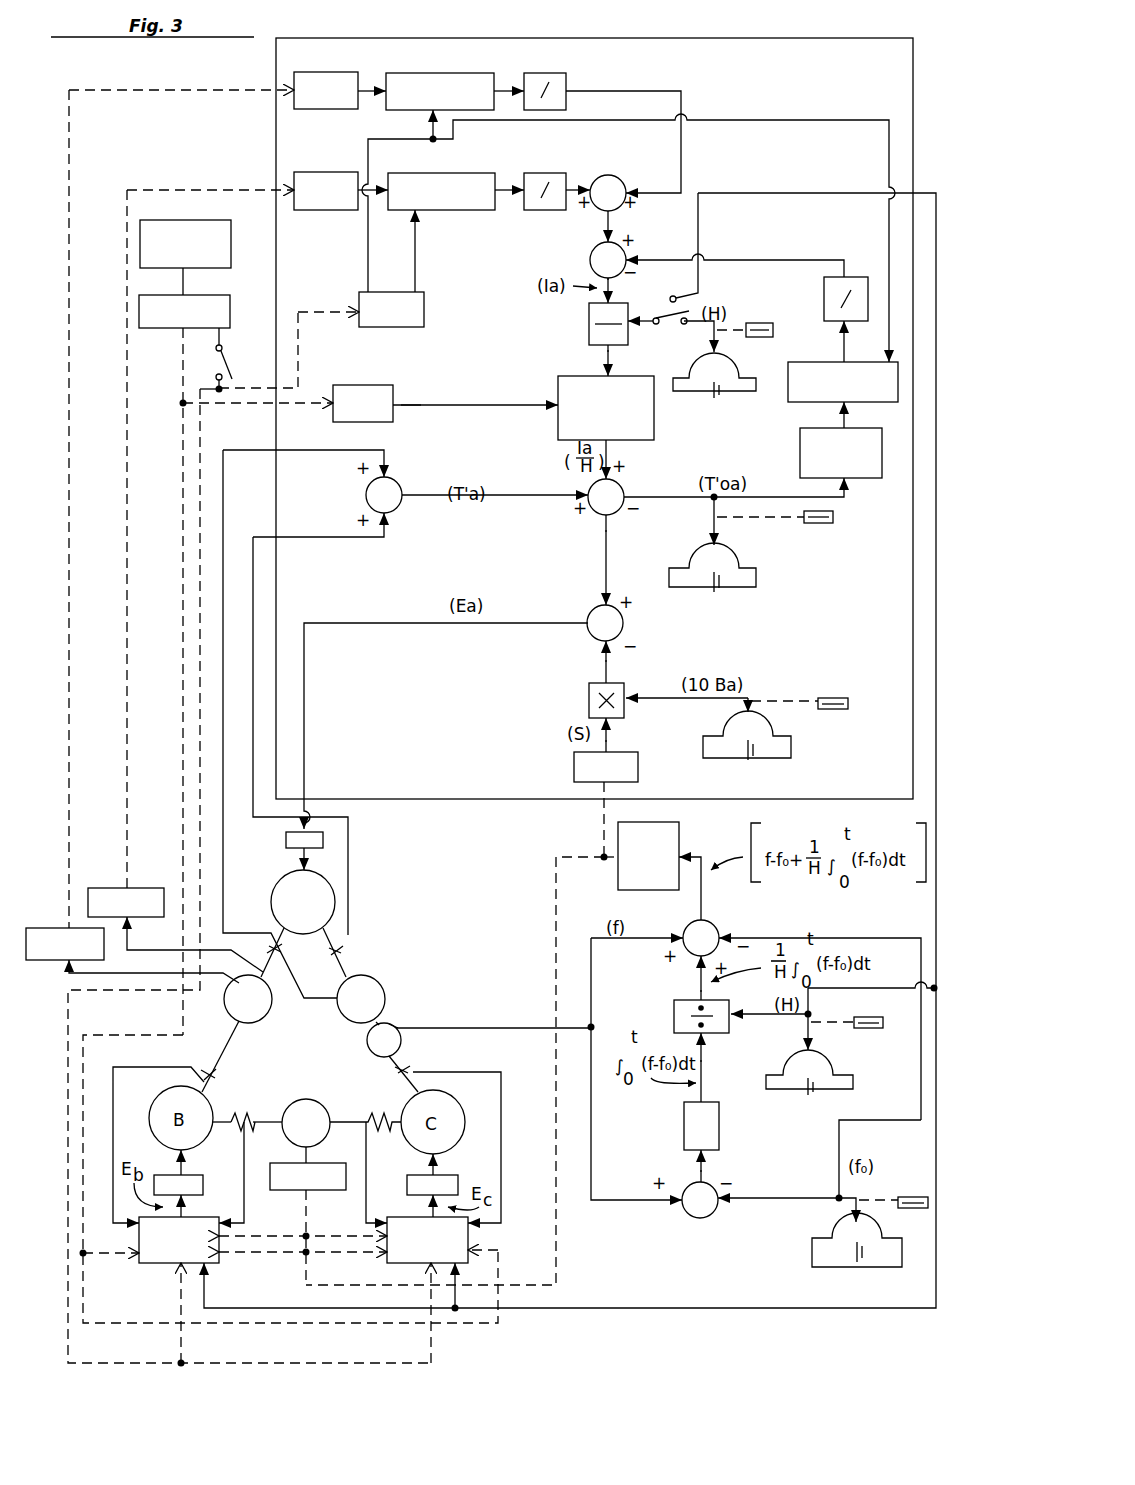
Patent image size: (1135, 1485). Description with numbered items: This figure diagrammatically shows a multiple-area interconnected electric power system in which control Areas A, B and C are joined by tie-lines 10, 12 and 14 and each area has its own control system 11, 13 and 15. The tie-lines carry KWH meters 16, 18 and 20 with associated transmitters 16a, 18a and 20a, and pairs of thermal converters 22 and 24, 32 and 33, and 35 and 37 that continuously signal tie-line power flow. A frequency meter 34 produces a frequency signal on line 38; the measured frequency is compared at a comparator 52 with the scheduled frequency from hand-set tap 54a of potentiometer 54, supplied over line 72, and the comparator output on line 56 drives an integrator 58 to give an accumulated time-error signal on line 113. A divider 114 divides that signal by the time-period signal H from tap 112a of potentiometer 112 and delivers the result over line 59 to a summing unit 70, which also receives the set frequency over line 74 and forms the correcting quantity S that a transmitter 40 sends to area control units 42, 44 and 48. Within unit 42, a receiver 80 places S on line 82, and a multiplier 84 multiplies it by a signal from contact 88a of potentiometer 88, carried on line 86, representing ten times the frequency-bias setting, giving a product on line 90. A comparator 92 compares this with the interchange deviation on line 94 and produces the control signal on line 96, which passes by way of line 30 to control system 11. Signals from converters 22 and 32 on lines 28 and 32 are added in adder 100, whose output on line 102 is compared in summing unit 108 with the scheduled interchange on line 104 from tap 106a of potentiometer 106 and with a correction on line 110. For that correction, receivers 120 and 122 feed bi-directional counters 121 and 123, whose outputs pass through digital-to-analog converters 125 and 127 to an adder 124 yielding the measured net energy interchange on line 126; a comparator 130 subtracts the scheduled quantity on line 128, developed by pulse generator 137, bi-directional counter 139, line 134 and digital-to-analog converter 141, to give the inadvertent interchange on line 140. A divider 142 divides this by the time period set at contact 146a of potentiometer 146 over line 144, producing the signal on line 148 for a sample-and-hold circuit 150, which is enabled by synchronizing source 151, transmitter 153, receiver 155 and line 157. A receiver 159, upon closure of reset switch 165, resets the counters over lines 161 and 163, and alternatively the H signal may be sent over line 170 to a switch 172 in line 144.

The tie-line 10 is at (232, 1030).
The control system 11 is at (292, 840).
The tie-line 12 is at (276, 1114).
The control system 13 is at (195, 1180).
The tie-line 14 is at (345, 960).
The control system 15 is at (450, 1176).
The KWH meter 16 is at (224, 1000).
The transmitter 16a is at (37, 952).
The KWH meter 18 is at (300, 1096).
The transmitter 18a is at (336, 1163).
The KWH meter 20 is at (372, 985).
The transmitter 20a is at (138, 888).
The thermal converter 22 is at (283, 947).
The thermal converter 24 is at (215, 1073).
The line 28 is at (226, 880).
The control line 30 is at (270, 816).
The thermal converter 32 is at (330, 945).
The thermal converter 33 is at (392, 1073).
The frequency meter 34 is at (395, 1023).
The thermal converter 35 is at (375, 1115).
The thermal converter 37 is at (238, 1115).
The line 38 is at (488, 1025).
The transmitter 40 is at (670, 832).
The area control unit 42 is at (700, 39).
The area control unit 44 is at (203, 1252).
The area control unit 48 is at (462, 1238).
The comparator 52 is at (697, 1214).
The potentiometer 54 is at (815, 1252).
The hand-set tap 54a is at (847, 1204).
The line 56 is at (707, 1172).
The integrator 58 is at (714, 1132).
The line 59 is at (700, 988).
The summing unit 70 is at (706, 928).
The line 72 is at (760, 1202).
The line 74 is at (832, 936).
The receiver 80 is at (637, 766).
The line 82 is at (610, 742).
The multiplier 84 is at (586, 699).
The line 86 is at (650, 691).
The potentiometer 88 is at (770, 737).
The hand-set contact 88a is at (752, 693).
The line 90 is at (603, 664).
The comparator 92 is at (625, 623).
The line 94 is at (603, 565).
The line 96 is at (427, 628).
The adder 100 is at (402, 478).
The line 102 is at (488, 497).
The line 104 is at (670, 500).
The potentiometer 106 is at (745, 590).
The adjustable tap 106a is at (717, 523).
The summing unit 108 is at (598, 510).
The line 110 is at (620, 452).
The potentiometer 112 is at (852, 1081).
The hand-set tap 112a is at (812, 1023).
The line 113 is at (702, 1059).
The divider 114 is at (672, 1014).
The receiver 120 is at (322, 80).
The bi-directional counter 121 is at (430, 80).
The receiver 122 is at (322, 172).
The bi-directional counter 123 is at (460, 172).
The adder 124 is at (612, 178).
The digital-to-analog converter 125 is at (548, 82).
The line 126 is at (613, 214).
The digital-to-analog converter 127 is at (545, 172).
The line 128 is at (727, 260).
The comparator 130 is at (589, 252).
The line 134 is at (843, 339).
The pulse generator 137 is at (877, 482).
The bi-directional counter 139 is at (797, 395).
The line 140 is at (620, 286).
The digital-to-analog converter 141 is at (857, 285).
The divider 142 is at (586, 318).
The line 144 is at (690, 336).
The potentiometer 146 is at (735, 373).
The contact 146a is at (720, 322).
The line 148 is at (598, 350).
The sample-and-hold circuit 150 is at (556, 384).
The source of synchronizing signals 151 is at (214, 232).
The transmitter 153 is at (230, 296).
The receiver 155 is at (362, 384).
The line 157 is at (420, 403).
The receiver 159 is at (425, 304).
The line 161 is at (366, 237).
The line 163 is at (415, 258).
The reset switch 165 is at (231, 352).
The line 170 is at (872, 197).
The switch 172 is at (665, 326).